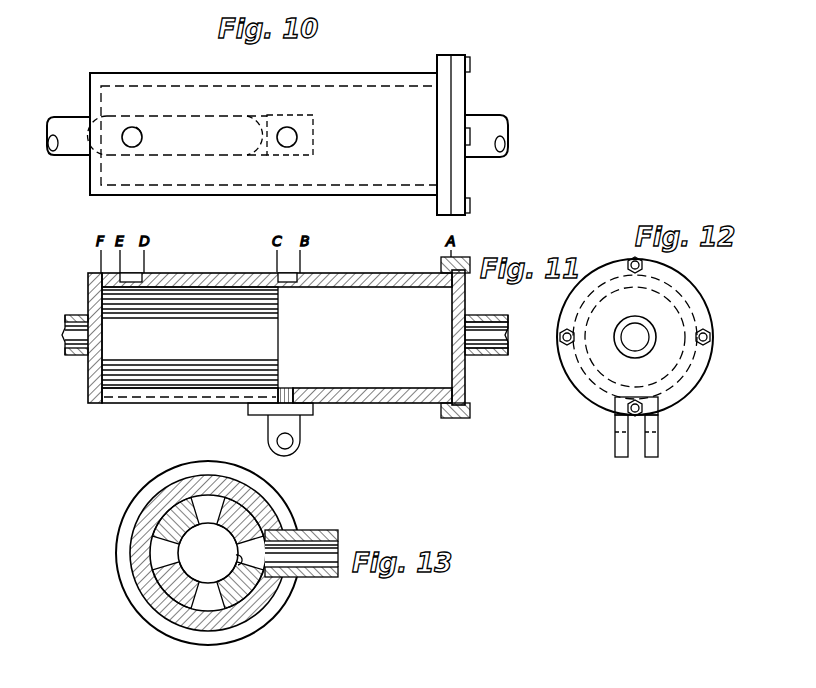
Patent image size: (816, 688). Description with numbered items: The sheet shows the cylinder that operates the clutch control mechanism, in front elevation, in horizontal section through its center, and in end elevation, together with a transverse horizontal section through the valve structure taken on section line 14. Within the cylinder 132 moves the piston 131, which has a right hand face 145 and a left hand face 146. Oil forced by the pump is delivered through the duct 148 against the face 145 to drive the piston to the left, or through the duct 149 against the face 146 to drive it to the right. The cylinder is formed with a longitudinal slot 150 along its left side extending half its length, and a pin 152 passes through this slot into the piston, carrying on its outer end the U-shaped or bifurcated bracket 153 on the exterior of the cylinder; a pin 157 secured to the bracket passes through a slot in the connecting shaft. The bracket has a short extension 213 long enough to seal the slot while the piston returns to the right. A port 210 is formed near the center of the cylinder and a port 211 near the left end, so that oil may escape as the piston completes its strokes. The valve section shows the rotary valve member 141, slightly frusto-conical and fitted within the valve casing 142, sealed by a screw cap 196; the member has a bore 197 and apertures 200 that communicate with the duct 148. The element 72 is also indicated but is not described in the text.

In FIG. 13, the section line 14 is at (108, 551).
In FIG. 10, the pin 72 is at (273, 117).
In FIG. 11, the piston 131 is at (412, 376).
In FIG. 10, the cylinder 132 is at (366, 195).
In FIG. 11, the cylinder 132 is at (354, 403).
In FIG. 12, the cylinder 132 is at (717, 295).
In FIG. 13, the rotary valve member 141 is at (215, 625).
In FIG. 13, the valve casing 142 is at (131, 567).
In FIG. 11, the right hand face 145 is at (462, 344).
In FIG. 11, the left hand face 146 is at (276, 338).
In FIG. 10, the duct 148 is at (497, 116).
In FIG. 11, the duct 148 is at (497, 358).
In FIG. 12, the duct 148 is at (642, 312).
In FIG. 13, the duct 148 is at (318, 530).
In FIG. 10, the duct 149 is at (73, 158).
In FIG. 11, the duct 149 is at (76, 357).
In FIG. 11, the longitudinal slot 150 is at (197, 404).
In FIG. 11, the pin 152 is at (292, 387).
In FIG. 11, the bracket 153 is at (296, 438).
In FIG. 12, the bracket 153 is at (656, 424).
In FIG. 11, the pin 157 is at (283, 456).
In FIG. 13, the screw cap 196 is at (161, 621).
In FIG. 13, the bore 197 is at (184, 569).
In FIG. 13, the apertures 200 is at (238, 562).
In FIG. 10, the port 210 is at (297, 134).
In FIG. 11, the port 210 is at (298, 275).
In FIG. 10, the port 211 is at (138, 128).
In FIG. 11, the port 211 is at (142, 275).
In FIG. 11, the extension 213 is at (256, 416).